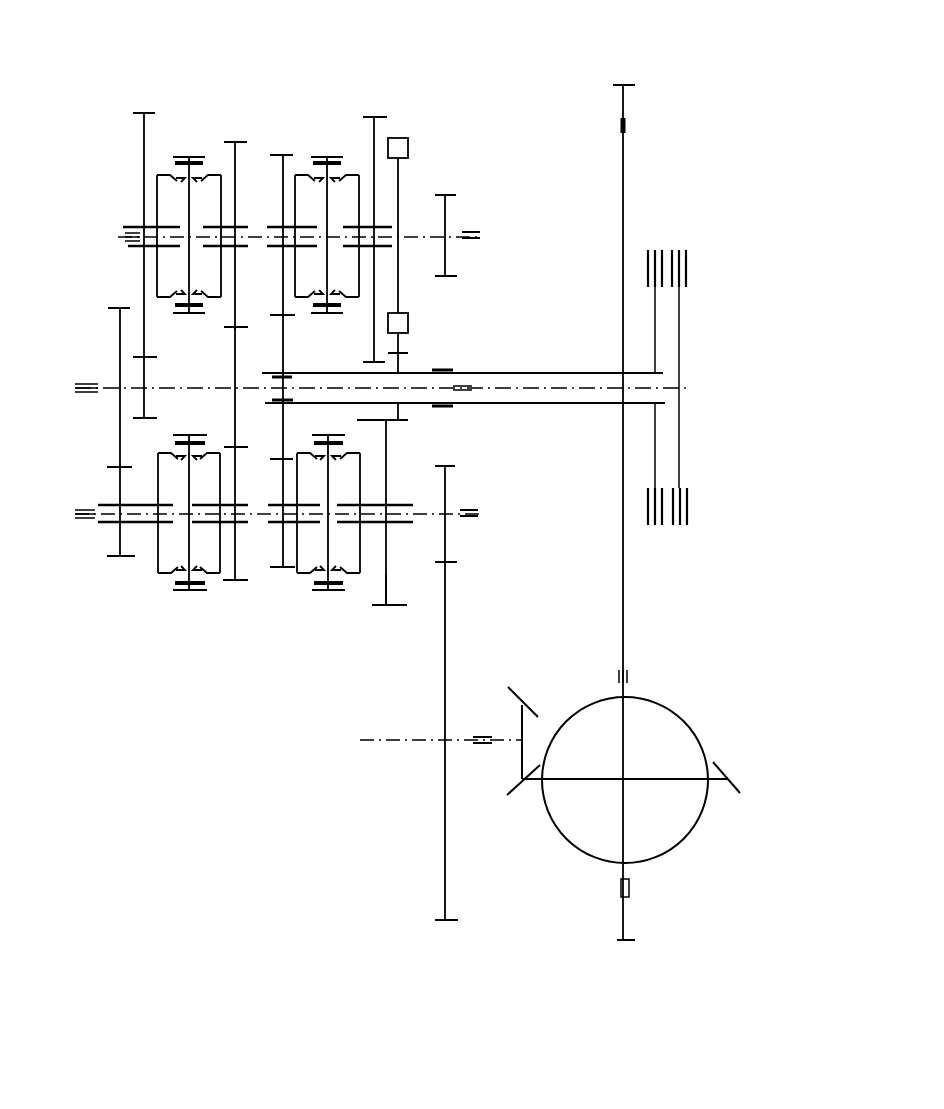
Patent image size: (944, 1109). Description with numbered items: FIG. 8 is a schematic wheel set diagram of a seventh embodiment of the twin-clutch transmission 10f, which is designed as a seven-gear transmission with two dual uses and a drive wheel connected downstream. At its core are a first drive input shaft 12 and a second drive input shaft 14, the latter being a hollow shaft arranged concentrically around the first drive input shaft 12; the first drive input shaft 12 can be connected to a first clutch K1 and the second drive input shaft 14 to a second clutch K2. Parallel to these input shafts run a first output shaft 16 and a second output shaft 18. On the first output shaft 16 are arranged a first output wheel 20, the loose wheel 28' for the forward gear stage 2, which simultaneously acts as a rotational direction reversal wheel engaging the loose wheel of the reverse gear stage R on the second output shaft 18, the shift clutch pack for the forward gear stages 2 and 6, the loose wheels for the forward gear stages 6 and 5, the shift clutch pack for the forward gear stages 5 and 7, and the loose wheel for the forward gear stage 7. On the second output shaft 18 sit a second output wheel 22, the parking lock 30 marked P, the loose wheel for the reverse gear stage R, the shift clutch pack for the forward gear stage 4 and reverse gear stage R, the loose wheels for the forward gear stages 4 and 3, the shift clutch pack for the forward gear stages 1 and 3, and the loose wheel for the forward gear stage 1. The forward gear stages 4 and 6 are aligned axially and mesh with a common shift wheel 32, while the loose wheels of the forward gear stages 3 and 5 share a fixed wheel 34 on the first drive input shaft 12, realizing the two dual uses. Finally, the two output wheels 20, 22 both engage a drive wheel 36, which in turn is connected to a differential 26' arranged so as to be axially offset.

The twin-clutch transmission 10f is at (747, 274).
The first drive input shaft 12 is at (582, 388).
The second drive input shaft 14 is at (558, 372).
The first output shaft 16 is at (453, 512).
The second output shaft 18 is at (448, 233).
The first output wheel 20 is at (447, 545).
The second output wheel 22 is at (445, 260).
The differential 26' is at (671, 736).
The loose wheel for forward gear stage 2 28' is at (474, 591).
The parking lock 30 is at (408, 143).
The common shift wheel 32 is at (280, 425).
The fixed wheel 34 is at (232, 353).
The drive wheel 36 is at (415, 778).
The forward gear stage 1 is at (145, 253).
The forward gear stage 2 is at (382, 528).
The forward gear stage 3 is at (236, 222).
The forward gear stage 4 is at (282, 222).
The forward gear stage 5 is at (235, 528).
The forward gear stage 6 is at (282, 530).
The forward gear stage 7 is at (121, 447).
The reverse gear stage R is at (375, 225).
The parking lock P is at (398, 265).
The first clutch K1 is at (684, 377).
The second clutch K2 is at (647, 377).